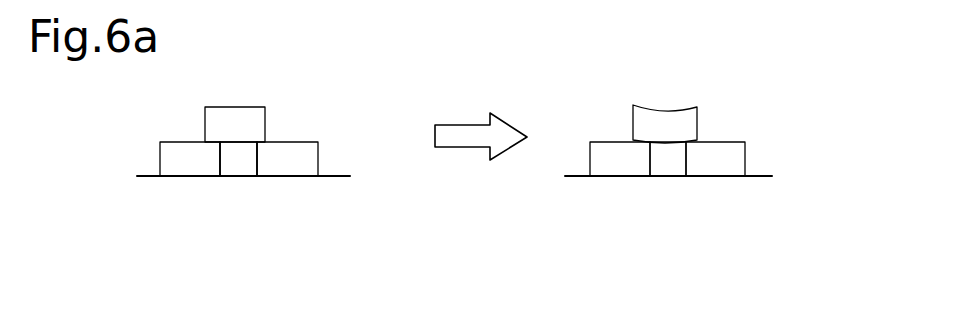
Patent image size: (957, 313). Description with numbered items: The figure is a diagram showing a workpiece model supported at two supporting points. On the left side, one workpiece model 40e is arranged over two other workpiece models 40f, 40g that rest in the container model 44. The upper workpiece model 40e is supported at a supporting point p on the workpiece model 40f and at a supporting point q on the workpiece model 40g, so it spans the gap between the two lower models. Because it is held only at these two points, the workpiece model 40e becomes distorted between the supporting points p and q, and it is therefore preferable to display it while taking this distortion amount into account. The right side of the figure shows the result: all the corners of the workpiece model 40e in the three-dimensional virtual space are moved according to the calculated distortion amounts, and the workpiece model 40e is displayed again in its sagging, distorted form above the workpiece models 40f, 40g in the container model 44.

The workpiece model 40e is at (250, 118).
The workpiece model 40f is at (183, 168).
The workpiece model 40g is at (310, 158).
The supporting point p is at (213, 152).
The supporting point q is at (264, 153).
The container model 44 is at (342, 190).